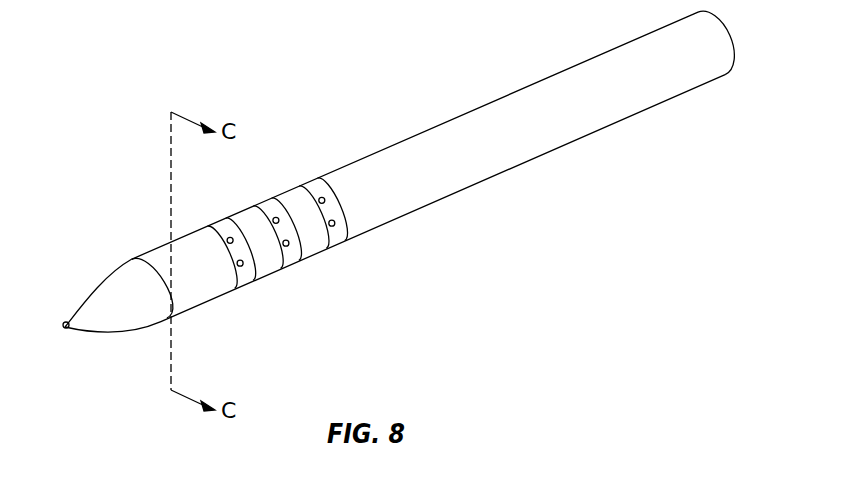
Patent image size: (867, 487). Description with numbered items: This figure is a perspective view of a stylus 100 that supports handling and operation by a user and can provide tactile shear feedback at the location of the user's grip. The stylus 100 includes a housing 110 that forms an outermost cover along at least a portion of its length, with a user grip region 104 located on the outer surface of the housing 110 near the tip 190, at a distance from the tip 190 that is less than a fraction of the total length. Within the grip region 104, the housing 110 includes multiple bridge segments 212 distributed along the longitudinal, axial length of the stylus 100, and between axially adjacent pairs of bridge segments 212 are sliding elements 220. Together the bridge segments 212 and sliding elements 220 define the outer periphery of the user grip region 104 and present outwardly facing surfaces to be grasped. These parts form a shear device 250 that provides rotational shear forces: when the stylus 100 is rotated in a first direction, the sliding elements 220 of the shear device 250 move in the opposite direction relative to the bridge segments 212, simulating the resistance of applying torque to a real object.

The stylus 100 is at (332, 108).
The user grip region 104 is at (226, 218).
The housing 110 is at (475, 185).
The tip 190 is at (65, 331).
The bridge segments 212 is at (300, 260).
The sliding elements 220 is at (218, 232).
The shear device 250 is at (284, 192).